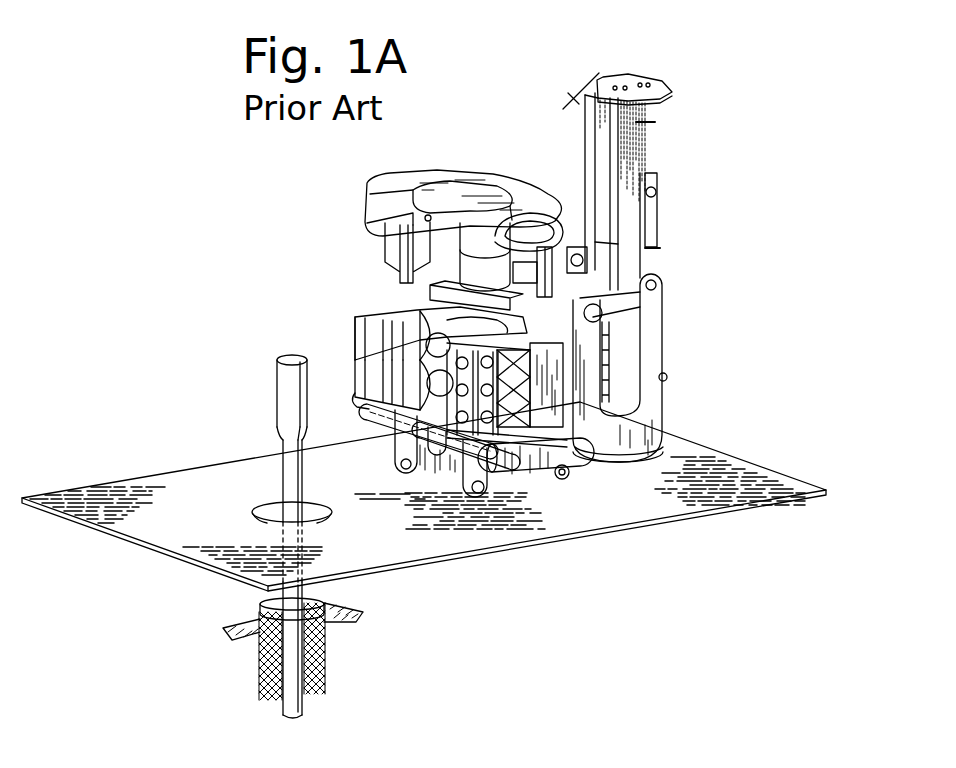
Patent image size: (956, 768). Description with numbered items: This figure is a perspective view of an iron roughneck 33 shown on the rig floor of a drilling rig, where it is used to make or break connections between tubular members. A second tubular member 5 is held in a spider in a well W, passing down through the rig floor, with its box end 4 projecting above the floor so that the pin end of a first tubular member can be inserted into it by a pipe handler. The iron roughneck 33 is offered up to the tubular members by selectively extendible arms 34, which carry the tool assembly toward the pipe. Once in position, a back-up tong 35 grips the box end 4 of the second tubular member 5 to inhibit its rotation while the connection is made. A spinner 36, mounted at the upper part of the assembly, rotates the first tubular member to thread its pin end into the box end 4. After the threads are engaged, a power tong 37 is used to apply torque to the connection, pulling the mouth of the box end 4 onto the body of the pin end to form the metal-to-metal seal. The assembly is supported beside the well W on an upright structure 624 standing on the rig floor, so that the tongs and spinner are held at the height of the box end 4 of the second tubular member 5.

The box end 4 is at (290, 404).
The second tubular member 5 is at (286, 470).
The iron roughneck 33 is at (399, 365).
The selectively extendible arms 34 is at (535, 460).
The back-up tong 35 is at (356, 387).
The spinner 36 is at (430, 262).
The power tong 37 is at (354, 324).
The mast / support column 624 is at (668, 344).
The well W is at (308, 657).